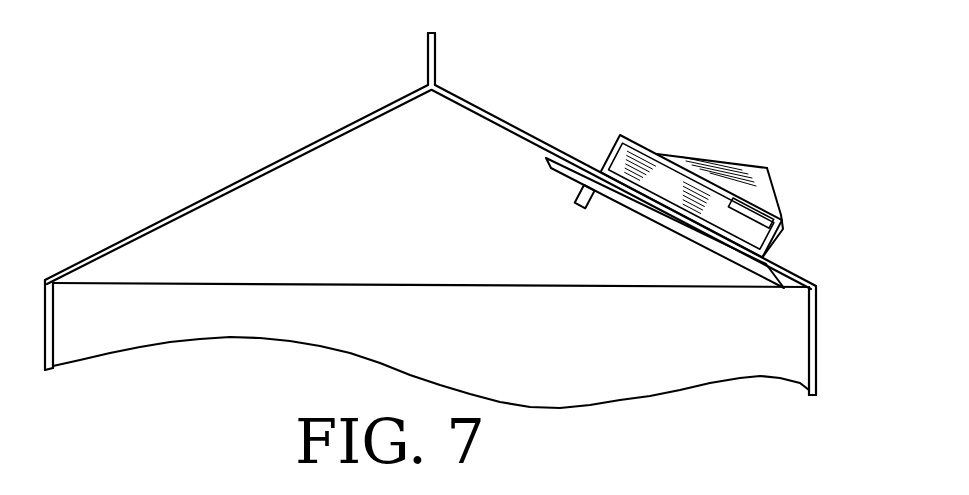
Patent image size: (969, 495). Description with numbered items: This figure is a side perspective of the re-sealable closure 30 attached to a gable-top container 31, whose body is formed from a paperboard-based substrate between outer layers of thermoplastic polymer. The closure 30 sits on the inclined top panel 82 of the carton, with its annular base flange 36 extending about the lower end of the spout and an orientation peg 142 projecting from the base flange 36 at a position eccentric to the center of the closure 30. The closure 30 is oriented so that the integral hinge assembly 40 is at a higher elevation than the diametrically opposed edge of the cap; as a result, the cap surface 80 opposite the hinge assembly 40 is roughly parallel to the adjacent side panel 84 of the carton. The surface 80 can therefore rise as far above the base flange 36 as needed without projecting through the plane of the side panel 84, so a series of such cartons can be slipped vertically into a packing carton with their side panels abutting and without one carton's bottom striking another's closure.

The re-sealable closure 30 is at (766, 135).
The gable-top container 31 is at (253, 172).
The annular base flange 36 is at (566, 175).
The integral hinge assembly 40 is at (603, 150).
The surface 80 is at (776, 193).
The inclined top panel 82 is at (483, 118).
The side panel 84 is at (817, 348).
The orientation peg 142 is at (584, 208).